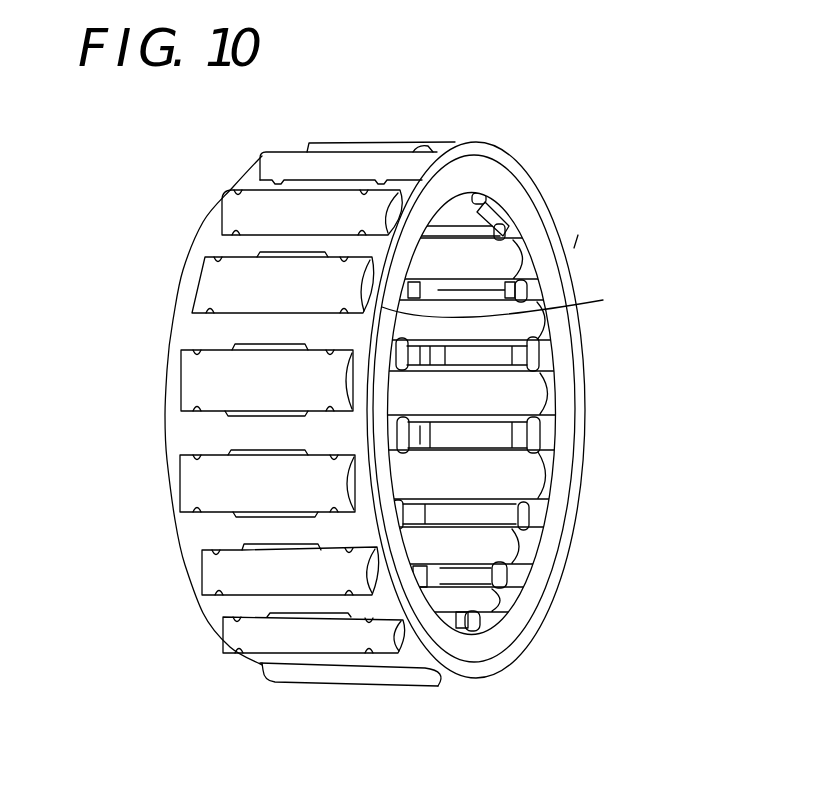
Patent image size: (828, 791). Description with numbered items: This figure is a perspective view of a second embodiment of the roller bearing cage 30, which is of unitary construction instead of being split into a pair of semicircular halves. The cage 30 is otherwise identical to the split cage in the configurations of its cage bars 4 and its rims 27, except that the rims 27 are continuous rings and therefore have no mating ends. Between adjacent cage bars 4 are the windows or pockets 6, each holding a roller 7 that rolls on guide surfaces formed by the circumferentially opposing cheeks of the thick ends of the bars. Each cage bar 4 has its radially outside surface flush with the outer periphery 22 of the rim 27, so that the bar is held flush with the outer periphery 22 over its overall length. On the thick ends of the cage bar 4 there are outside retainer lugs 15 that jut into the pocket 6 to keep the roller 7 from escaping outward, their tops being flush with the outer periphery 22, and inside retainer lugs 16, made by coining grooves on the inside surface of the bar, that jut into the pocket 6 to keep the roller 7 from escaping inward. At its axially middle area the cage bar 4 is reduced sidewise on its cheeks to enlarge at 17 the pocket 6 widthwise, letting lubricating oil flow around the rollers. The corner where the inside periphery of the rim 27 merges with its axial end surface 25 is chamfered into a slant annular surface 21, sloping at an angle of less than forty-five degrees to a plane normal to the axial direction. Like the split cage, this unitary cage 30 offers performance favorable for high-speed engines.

The cage bar 4 is at (252, 428).
The pocket 6 is at (212, 455).
The roller 7 is at (518, 474).
The outside retainer lug 15 is at (204, 308).
The inside retainer lug 16 is at (520, 492).
The widthwise enlargement of the pocket 17 is at (252, 415).
The slant annular surface 21 is at (502, 183).
The outer periphery 22 is at (410, 183).
The axial end surface 25 is at (492, 663).
The rim 27 is at (200, 247).
The roller bearing cage 30 is at (570, 230).